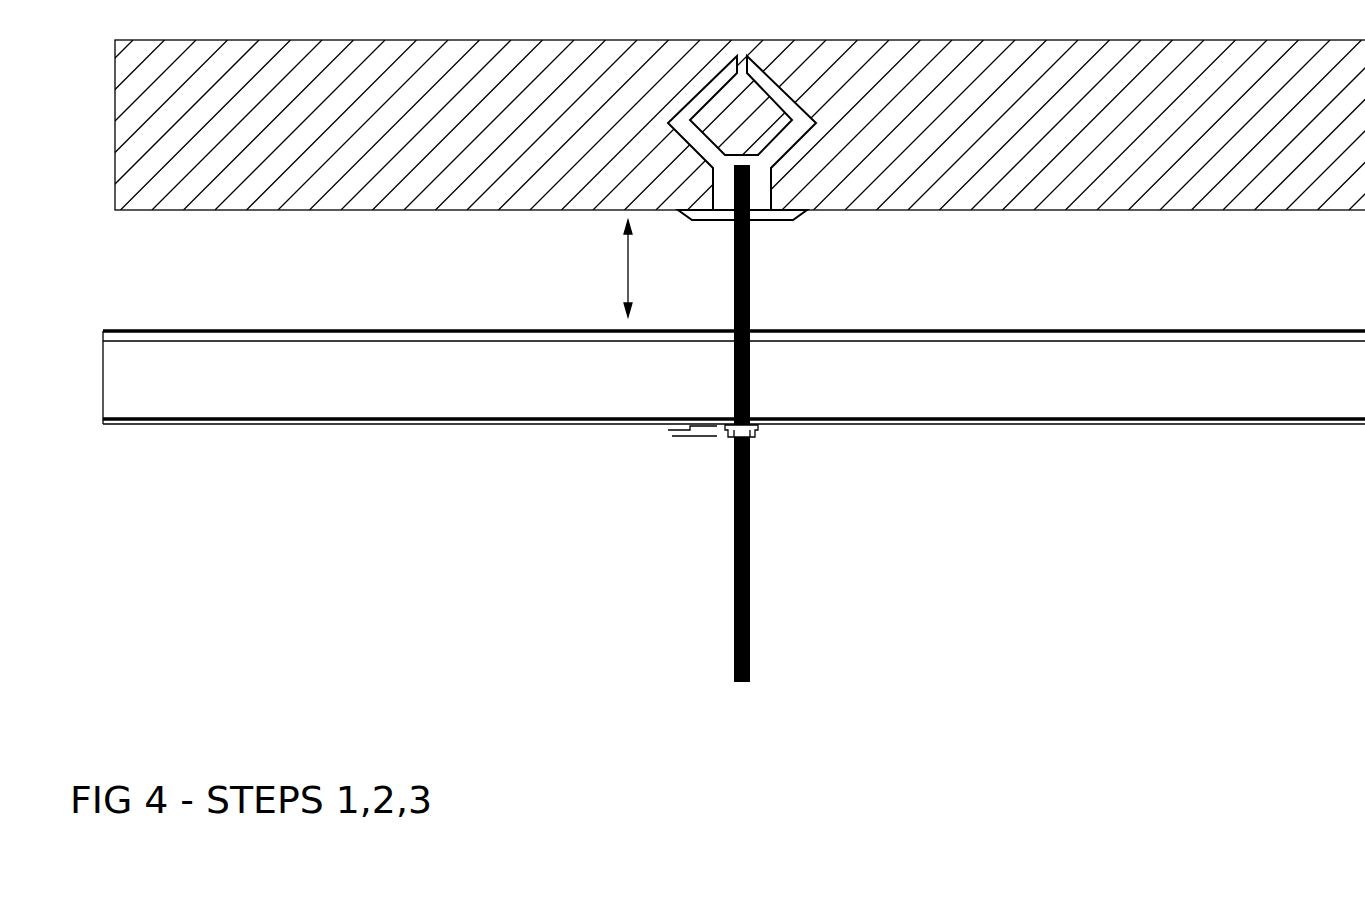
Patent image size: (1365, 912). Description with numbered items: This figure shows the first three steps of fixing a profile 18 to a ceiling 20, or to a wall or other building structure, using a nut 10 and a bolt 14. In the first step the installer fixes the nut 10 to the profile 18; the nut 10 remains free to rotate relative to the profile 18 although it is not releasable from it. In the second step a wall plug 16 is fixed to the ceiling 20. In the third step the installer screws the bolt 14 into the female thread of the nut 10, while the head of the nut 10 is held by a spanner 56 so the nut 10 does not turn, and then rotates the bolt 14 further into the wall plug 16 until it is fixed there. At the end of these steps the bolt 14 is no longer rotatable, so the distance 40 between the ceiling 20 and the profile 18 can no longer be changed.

The nut 10 is at (758, 430).
The bolt 14 is at (736, 313).
The wall plug 16 is at (758, 182).
The profile 18 is at (968, 392).
The ceiling 20 is at (1053, 170).
The distance 40 is at (607, 268).
The spanner 56 is at (692, 437).